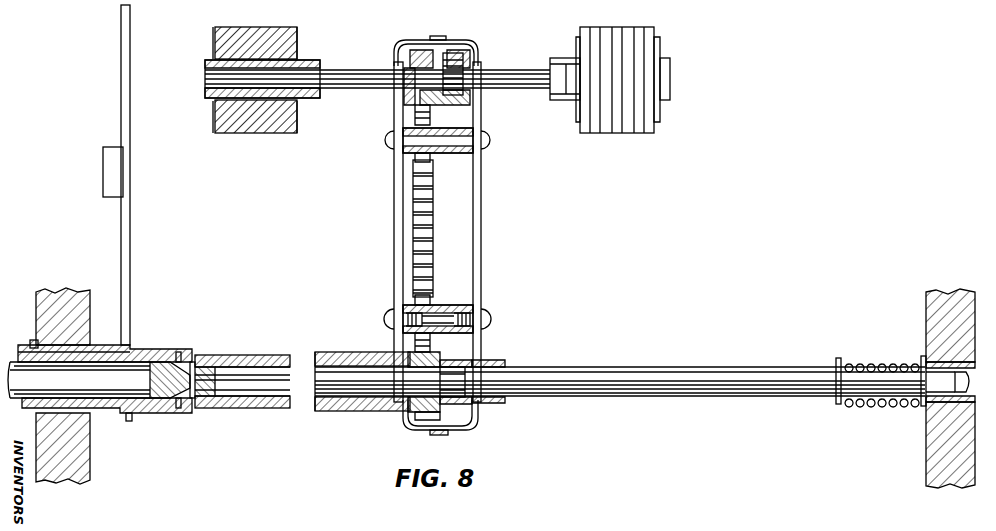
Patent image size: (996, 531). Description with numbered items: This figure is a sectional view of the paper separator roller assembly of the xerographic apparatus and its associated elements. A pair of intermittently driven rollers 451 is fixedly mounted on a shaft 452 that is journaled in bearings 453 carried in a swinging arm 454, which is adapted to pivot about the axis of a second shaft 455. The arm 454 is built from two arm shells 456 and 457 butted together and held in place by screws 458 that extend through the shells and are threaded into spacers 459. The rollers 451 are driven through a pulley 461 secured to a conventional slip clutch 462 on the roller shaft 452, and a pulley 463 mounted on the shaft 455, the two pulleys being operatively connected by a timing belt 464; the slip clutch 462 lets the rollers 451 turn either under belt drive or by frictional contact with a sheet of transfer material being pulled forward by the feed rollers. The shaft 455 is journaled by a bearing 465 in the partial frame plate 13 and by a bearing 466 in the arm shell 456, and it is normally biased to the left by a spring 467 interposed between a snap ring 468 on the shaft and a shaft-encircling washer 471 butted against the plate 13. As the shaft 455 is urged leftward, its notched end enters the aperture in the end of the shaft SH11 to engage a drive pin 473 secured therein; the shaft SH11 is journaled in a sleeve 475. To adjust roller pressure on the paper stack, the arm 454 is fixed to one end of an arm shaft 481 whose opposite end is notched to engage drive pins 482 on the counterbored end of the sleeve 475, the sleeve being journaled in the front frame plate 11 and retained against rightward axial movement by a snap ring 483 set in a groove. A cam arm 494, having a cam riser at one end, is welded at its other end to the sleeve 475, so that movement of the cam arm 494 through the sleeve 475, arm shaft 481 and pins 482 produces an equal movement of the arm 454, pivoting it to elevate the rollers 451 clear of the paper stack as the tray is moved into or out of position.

The front plate 11 is at (88, 461).
The partial plate 13 is at (938, 464).
The intermittently driven rollers 451 is at (262, 27).
The shaft 452 is at (347, 62).
The bearings 453 is at (395, 95).
The arm 454 is at (444, 242).
The shaft 455 is at (572, 367).
The arm shell 456 is at (481, 254).
The arm shell 457 is at (394, 254).
The screws 458 is at (483, 137).
The spacers 459 is at (440, 153).
The pulley 461 is at (405, 50).
The slip clutch 462 is at (470, 52).
The pulley 463 is at (446, 420).
The timing belt 464 is at (430, 217).
The bearing 465 is at (932, 405).
The bearing 466 is at (496, 360).
The spring 467 is at (853, 401).
The snap ring 468 is at (836, 360).
The washer 471 is at (922, 404).
The drive pin 473 is at (196, 358).
The sleeve 475 is at (114, 413).
The arm shaft 481 is at (262, 355).
The drive pins 482 is at (179, 352).
The snap ring 483 is at (33, 341).
The cam arm 494 is at (130, 27).